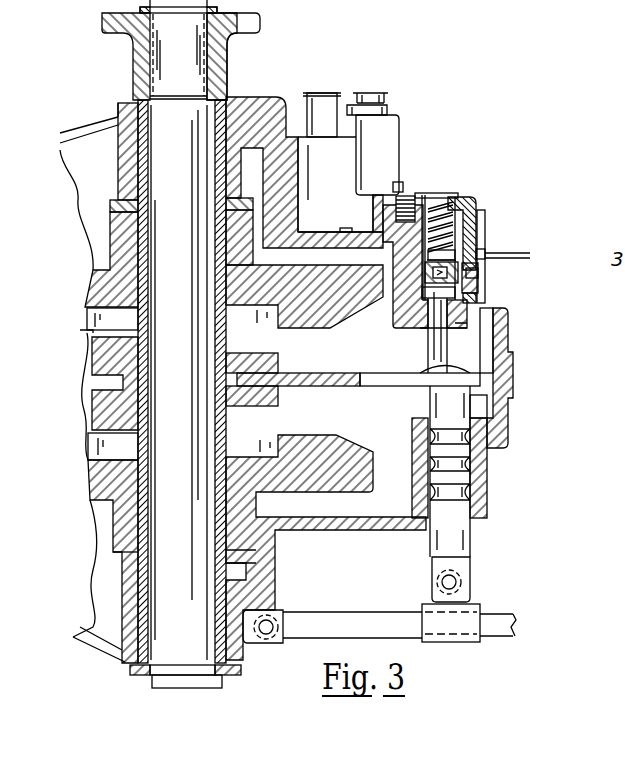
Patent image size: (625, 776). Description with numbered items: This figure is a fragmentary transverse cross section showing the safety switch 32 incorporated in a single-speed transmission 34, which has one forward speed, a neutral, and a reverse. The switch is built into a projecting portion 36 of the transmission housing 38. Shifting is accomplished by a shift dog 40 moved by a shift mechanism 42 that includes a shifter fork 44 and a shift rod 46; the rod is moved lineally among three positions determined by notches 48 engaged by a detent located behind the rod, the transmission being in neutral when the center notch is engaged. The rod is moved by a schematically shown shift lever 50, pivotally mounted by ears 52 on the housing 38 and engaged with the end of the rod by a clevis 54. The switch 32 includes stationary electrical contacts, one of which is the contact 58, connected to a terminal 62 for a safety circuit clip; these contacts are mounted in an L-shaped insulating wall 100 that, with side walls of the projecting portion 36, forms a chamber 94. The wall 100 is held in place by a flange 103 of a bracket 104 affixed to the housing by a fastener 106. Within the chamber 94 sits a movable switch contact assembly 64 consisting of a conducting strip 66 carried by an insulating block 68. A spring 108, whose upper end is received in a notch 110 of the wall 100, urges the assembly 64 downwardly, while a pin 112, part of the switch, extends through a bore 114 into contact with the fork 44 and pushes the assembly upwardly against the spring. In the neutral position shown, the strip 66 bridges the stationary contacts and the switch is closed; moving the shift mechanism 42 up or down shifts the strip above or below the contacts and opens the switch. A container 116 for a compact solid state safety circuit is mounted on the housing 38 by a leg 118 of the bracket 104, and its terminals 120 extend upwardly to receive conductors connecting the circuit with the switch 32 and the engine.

The safety switch 32 is at (490, 213).
The single-speed transmission 34 is at (298, 73).
The projecting portion 36 is at (477, 207).
The transmission housing 38 is at (517, 329).
The shift dog 40 is at (257, 414).
The shift mechanism 42 is at (477, 401).
The shifter fork 44 is at (350, 370).
The shift rod 46 is at (430, 390).
The notches 48 is at (463, 493).
The shift lever 50 is at (363, 610).
The ears 52 is at (268, 608).
The clevis 54 is at (428, 600).
The stationary electrical contact 58 is at (478, 274).
The terminal 62 is at (500, 256).
The movable switch contact assembly 64 is at (432, 272).
The conducting strip 66 is at (485, 270).
The insulating block 68 is at (433, 265).
The chamber 94 is at (440, 200).
The L-shaped insulating wall 100 is at (455, 250).
The flange 103 is at (423, 195).
The bracket 104 is at (353, 157).
The fastener 106 is at (393, 193).
The spring 108 is at (462, 218).
The notch 110 is at (458, 195).
The pin 112 is at (430, 345).
The bore 114 is at (458, 313).
The container 116 is at (298, 137).
The leg 118 is at (388, 120).
The terminals 120 is at (366, 104).